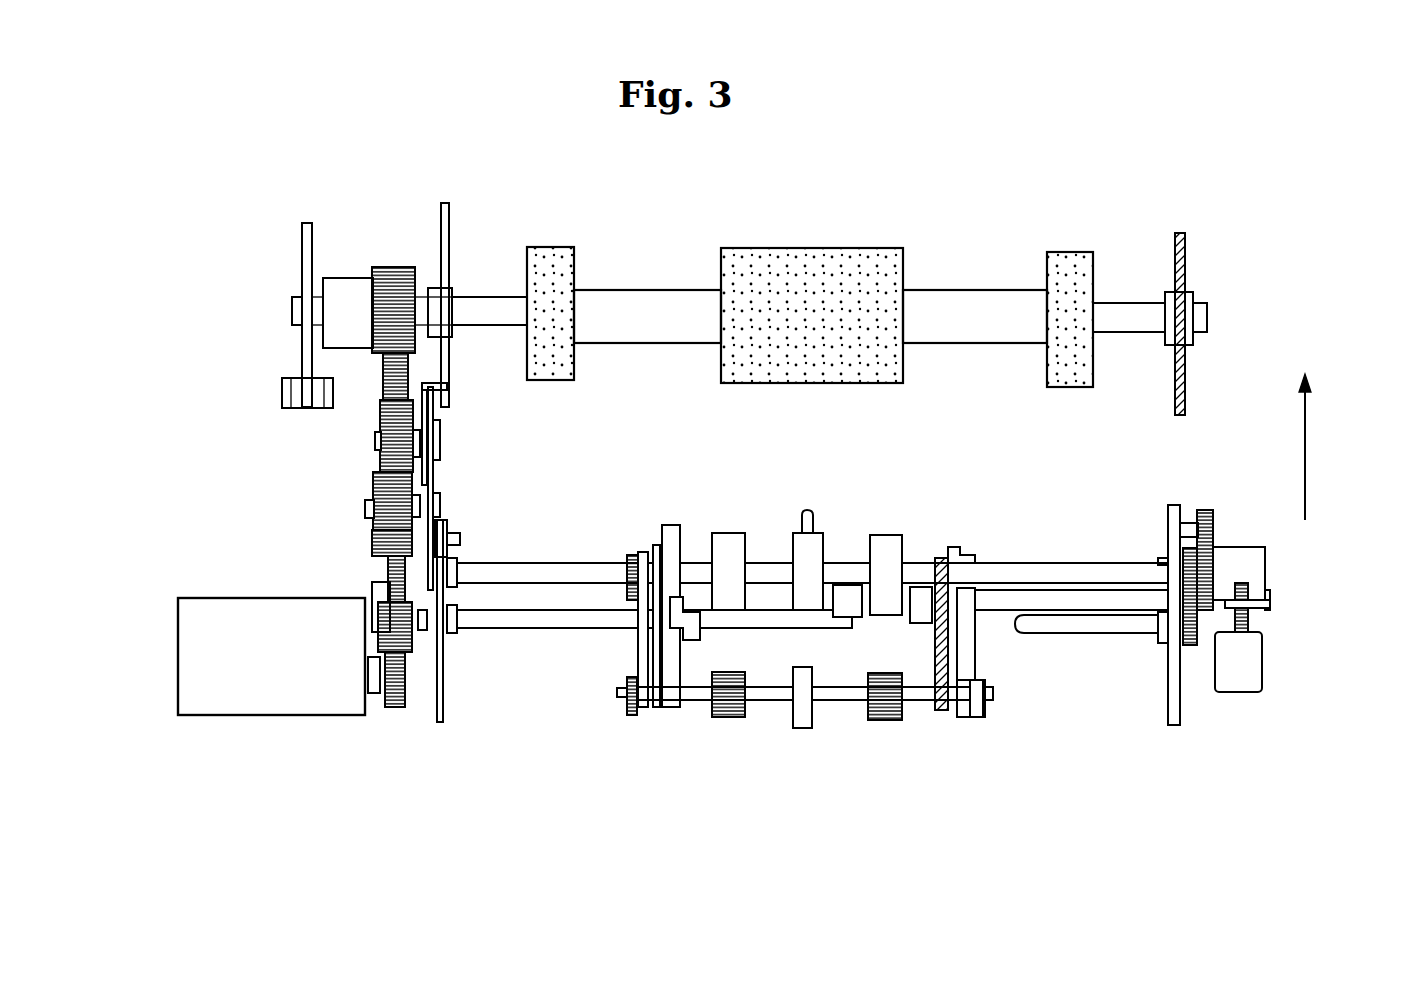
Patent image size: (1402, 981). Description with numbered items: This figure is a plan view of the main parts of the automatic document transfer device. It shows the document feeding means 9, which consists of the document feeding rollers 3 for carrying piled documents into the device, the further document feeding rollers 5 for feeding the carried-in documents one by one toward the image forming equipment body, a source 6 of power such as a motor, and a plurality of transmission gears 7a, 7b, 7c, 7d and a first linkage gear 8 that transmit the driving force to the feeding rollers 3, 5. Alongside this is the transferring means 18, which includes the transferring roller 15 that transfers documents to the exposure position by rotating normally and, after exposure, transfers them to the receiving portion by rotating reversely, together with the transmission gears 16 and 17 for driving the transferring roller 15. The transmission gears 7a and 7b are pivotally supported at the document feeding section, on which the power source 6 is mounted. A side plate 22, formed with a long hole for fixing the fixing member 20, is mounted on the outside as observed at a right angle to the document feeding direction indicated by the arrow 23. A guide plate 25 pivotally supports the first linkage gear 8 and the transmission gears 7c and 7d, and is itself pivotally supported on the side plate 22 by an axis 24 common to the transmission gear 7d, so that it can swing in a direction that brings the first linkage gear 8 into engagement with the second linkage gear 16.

The document feeding rollers 3 is at (728, 720).
The document feeding rollers 5 is at (887, 597).
The source of power 6 is at (210, 635).
The transmission gear 7a is at (393, 708).
The transmission gear 7b is at (413, 652).
The transmission gear 7c is at (385, 557).
The transmission gear 7d is at (372, 490).
The first linkage gear 8 is at (378, 461).
The document feeding means 9 is at (637, 716).
The transferring roller 15 is at (895, 365).
The second linkage gear 16 is at (383, 408).
The transmission gear 17 is at (395, 265).
The transferring means 18 is at (861, 295).
The fixing member 20 is at (456, 538).
The side plate 22 is at (445, 660).
The arrow 23 is at (1310, 498).
The axis 24 is at (388, 577).
The guide plate 25 is at (440, 405).